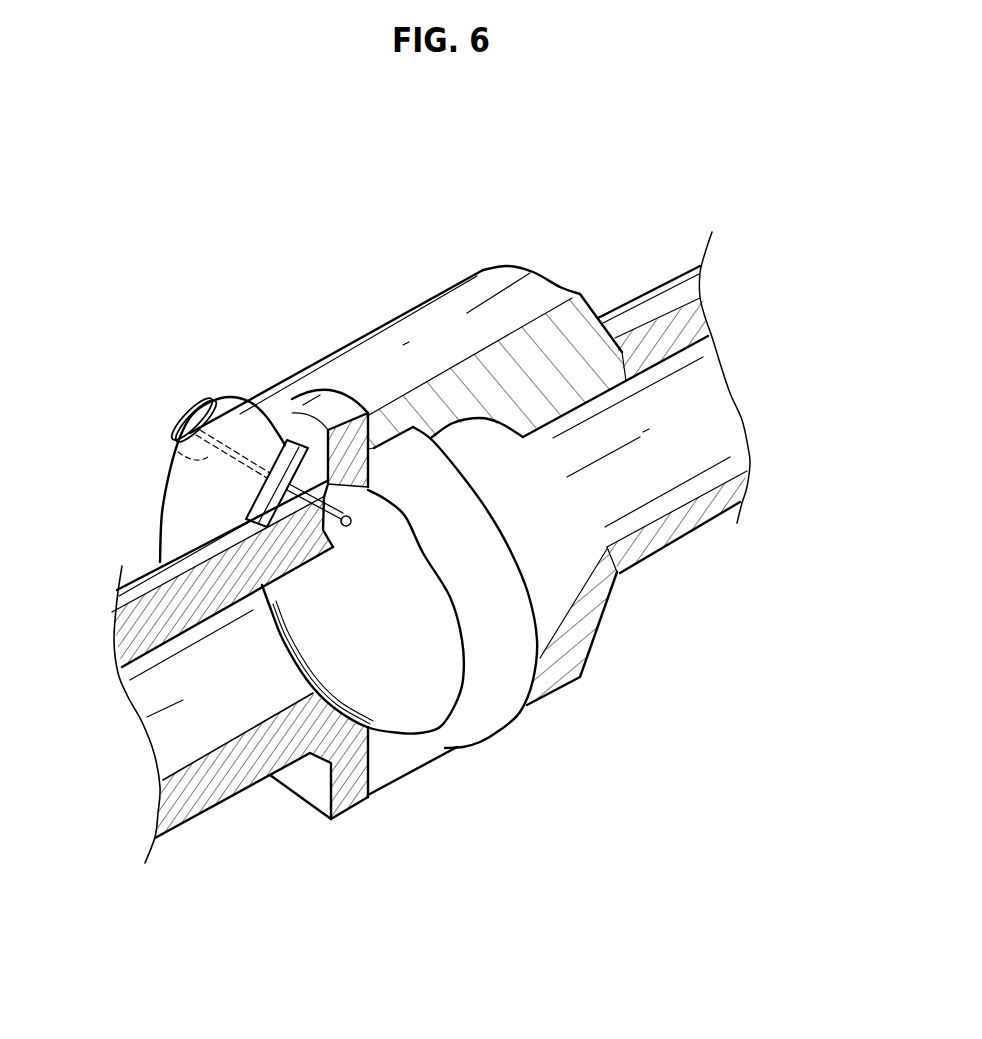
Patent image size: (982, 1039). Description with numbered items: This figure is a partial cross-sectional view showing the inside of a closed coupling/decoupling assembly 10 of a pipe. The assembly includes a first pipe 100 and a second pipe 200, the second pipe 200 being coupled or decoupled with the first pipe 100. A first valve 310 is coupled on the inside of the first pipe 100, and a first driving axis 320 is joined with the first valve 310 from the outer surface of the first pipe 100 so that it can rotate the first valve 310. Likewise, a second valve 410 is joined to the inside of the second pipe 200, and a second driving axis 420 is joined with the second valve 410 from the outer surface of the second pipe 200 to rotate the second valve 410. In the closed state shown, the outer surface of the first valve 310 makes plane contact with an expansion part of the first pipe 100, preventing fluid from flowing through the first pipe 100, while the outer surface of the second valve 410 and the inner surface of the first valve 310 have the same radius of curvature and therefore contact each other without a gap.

The coupling/decoupling assembly 10 is at (113, 134).
The first pipe 100 is at (142, 557).
The second pipe 200 is at (653, 568).
The first valve 310 is at (404, 703).
The first driving axis 320 is at (288, 447).
The second valve 410 is at (498, 687).
The second driving axis 420 is at (170, 406).